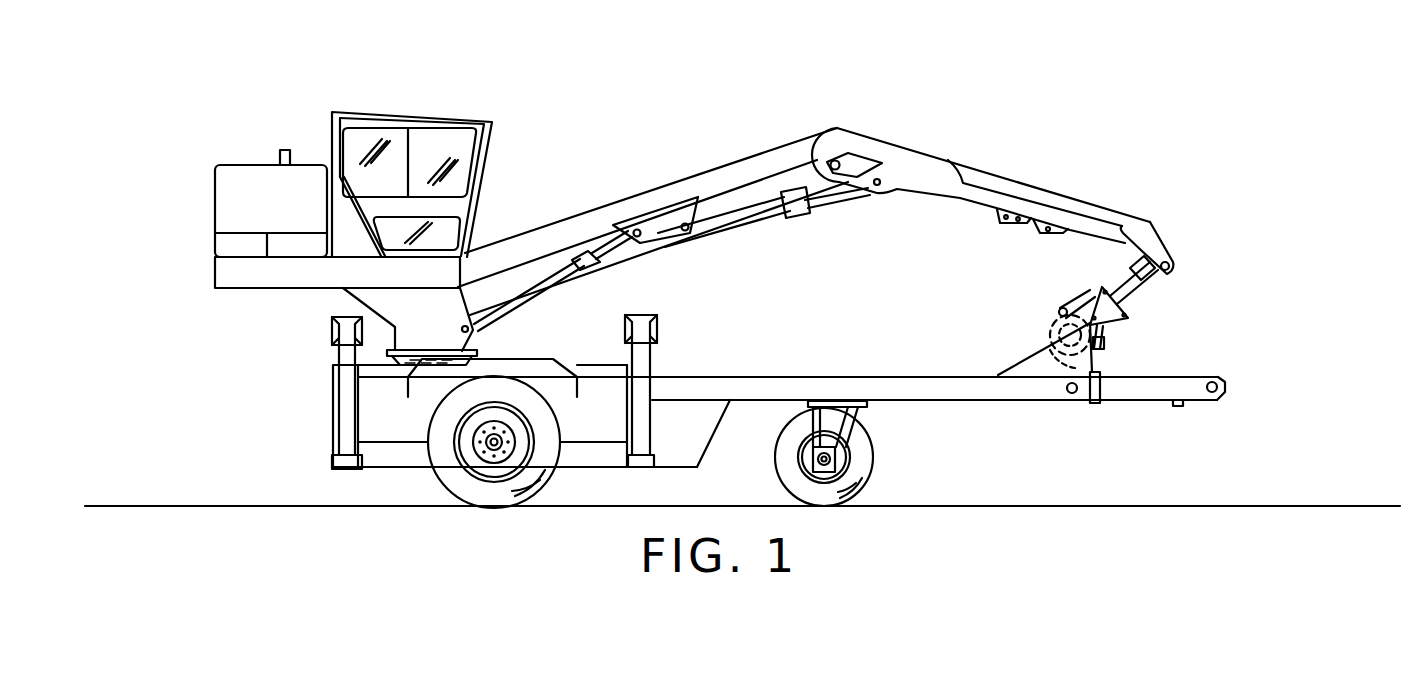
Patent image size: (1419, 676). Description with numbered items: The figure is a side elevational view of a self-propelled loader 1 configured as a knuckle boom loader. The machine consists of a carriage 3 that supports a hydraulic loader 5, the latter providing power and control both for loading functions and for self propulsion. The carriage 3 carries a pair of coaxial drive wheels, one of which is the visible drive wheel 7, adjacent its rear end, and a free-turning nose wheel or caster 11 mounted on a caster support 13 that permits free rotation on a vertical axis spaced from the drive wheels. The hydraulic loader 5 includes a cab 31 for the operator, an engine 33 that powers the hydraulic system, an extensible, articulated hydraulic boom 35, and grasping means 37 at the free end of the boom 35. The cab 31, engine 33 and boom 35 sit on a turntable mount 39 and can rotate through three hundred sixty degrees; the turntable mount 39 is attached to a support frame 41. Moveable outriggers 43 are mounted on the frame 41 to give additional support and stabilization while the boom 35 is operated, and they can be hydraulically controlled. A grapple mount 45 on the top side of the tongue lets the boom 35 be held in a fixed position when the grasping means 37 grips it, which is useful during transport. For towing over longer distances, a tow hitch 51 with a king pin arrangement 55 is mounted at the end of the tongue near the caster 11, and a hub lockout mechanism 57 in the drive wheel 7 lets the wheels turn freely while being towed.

The self-propelled loader 1 is at (664, 50).
The carriage 3 is at (720, 357).
The hydraulic loader 5 is at (535, 186).
The drive wheel 7 is at (513, 460).
The caster 11 is at (843, 462).
The caster support 13 is at (848, 410).
The cab 31 is at (452, 112).
The engine 33 is at (240, 165).
The hydraulic boom 35 is at (872, 131).
The grasping means 37 is at (1100, 287).
The turntable mount 39 is at (473, 342).
The support frame 41 is at (596, 370).
The outrigger 43 is at (332, 327).
The grapple mount 45 is at (1053, 323).
The tow hitch 51 is at (1192, 375).
The king pin arrangement 55 is at (1177, 407).
The hub lockout mechanism 57 is at (478, 460).